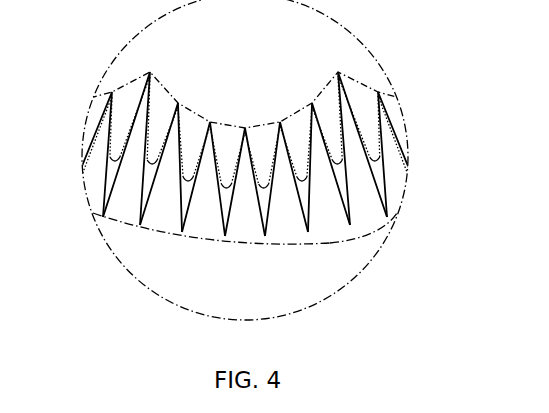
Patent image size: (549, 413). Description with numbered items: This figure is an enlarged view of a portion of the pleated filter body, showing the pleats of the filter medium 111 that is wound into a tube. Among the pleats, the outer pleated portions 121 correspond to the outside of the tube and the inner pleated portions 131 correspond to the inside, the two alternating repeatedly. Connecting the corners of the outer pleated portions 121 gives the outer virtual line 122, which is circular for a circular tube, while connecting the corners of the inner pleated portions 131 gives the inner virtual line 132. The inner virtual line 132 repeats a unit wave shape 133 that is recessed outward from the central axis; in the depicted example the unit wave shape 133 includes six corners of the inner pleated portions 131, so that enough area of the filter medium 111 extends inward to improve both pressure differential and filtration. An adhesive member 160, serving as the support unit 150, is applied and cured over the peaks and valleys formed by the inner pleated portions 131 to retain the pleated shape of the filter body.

The filter medium 111 is at (385, 182).
The outer pleated portions 121 is at (306, 231).
The outer virtual line 122 is at (362, 227).
The inner pleated portions 131 is at (385, 82).
The inner virtual line 132 is at (353, 85).
The unit wave shape 133 is at (338, 72).
The support unit 150 is at (86, 120).
The adhesive member 160 is at (113, 116).